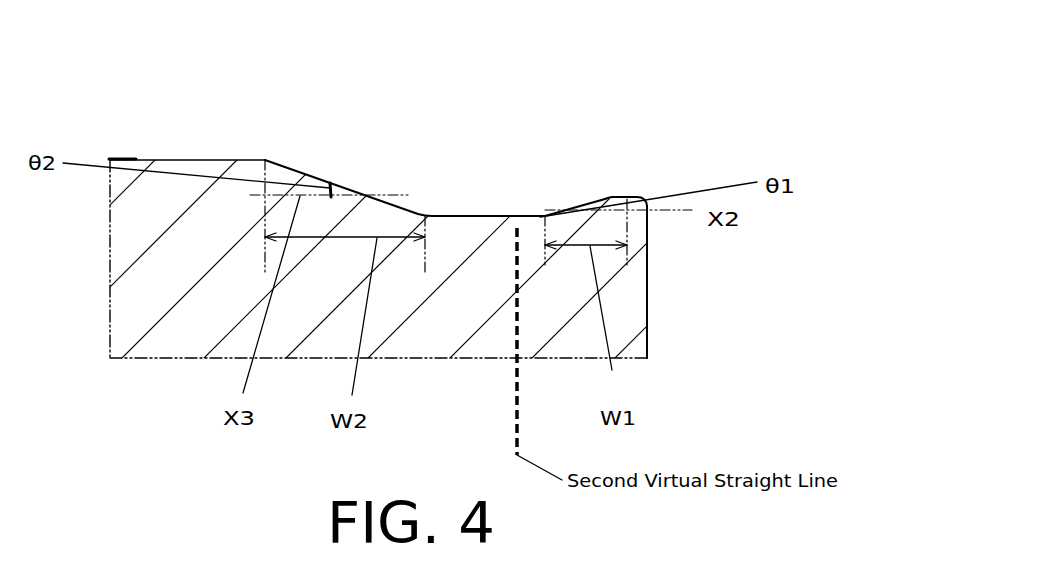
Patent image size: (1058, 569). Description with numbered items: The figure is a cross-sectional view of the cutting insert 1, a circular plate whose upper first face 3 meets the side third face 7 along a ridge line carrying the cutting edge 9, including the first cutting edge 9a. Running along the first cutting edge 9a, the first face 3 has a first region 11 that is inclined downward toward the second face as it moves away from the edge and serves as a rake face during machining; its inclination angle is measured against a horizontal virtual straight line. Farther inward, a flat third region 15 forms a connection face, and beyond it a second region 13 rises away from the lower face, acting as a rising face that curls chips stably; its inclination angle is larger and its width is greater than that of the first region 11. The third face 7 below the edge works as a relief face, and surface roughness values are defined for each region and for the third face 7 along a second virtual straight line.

The insert 1 is at (475, 180).
The first face 3 is at (468, 150).
The second region 13 is at (428, 207).
The third region 15 is at (480, 215).
The first region 11 is at (628, 184).
The cutting edge 9 is at (774, 170).
The first cutting edge 9a is at (598, 208).
The third face 7 is at (648, 299).